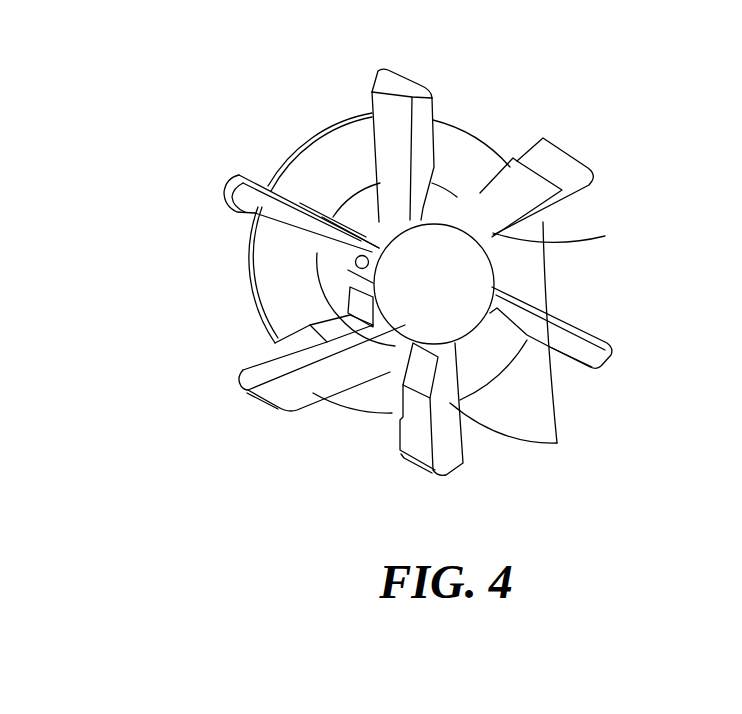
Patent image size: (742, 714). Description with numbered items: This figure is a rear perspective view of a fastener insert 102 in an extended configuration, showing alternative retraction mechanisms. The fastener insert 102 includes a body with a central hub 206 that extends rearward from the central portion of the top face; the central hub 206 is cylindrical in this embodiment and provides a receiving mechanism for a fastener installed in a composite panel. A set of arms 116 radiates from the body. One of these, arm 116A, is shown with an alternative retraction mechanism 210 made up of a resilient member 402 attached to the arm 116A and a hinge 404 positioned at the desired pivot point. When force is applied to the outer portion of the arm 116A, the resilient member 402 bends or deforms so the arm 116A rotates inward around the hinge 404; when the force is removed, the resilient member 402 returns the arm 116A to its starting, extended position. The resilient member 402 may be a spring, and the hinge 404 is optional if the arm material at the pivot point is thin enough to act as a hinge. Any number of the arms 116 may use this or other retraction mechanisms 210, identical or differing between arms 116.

The fastener insert 102 is at (593, 139).
The arms 116 is at (527, 346).
The arm 116A is at (257, 219).
The central hub 206 is at (425, 305).
The retraction mechanism 210 is at (363, 211).
The resilient member 402 is at (356, 236).
The hinge 404 is at (356, 265).